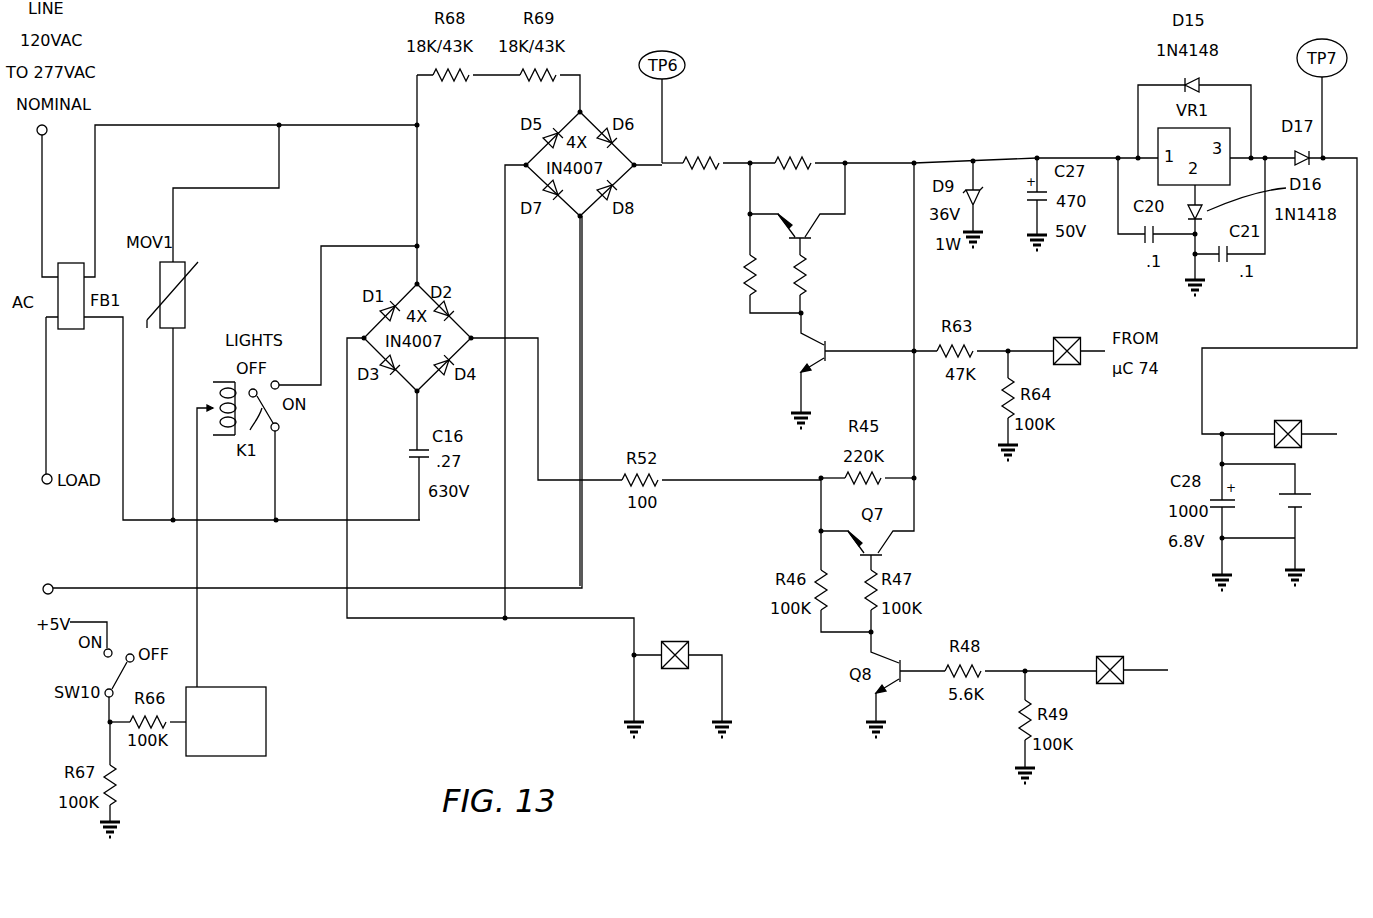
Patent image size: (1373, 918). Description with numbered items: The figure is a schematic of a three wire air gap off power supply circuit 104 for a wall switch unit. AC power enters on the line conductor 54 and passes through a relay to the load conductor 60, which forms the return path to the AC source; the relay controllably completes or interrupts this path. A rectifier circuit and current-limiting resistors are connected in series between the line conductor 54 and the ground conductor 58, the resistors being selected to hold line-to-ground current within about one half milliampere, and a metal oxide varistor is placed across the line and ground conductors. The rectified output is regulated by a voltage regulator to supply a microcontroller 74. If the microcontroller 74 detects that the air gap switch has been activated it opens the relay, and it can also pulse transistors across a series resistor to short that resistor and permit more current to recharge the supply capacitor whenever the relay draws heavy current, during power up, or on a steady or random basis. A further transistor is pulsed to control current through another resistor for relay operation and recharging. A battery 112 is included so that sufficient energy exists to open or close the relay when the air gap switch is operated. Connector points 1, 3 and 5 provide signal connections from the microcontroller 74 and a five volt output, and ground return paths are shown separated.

The line conductor 54 is at (42, 180).
The load conductor 60 is at (46, 387).
The ground conductor 58 is at (145, 584).
The microcontroller 74 is at (254, 690).
The power supply circuit 104 is at (851, 69).
The battery 112 is at (1317, 516).
The connector 1 is at (678, 690).
The connector 3 is at (1318, 422).
The connector 5 is at (1161, 678).